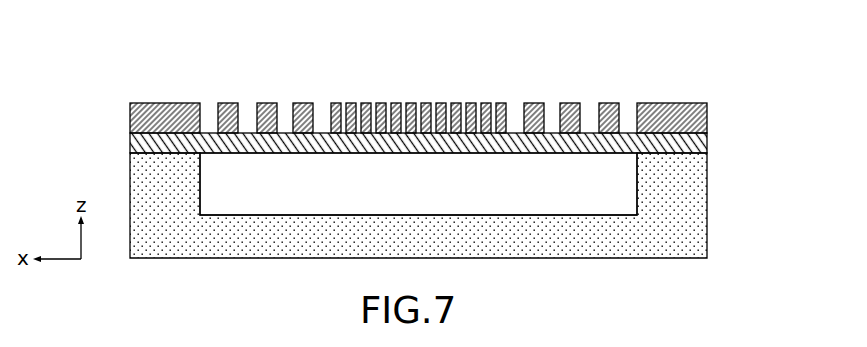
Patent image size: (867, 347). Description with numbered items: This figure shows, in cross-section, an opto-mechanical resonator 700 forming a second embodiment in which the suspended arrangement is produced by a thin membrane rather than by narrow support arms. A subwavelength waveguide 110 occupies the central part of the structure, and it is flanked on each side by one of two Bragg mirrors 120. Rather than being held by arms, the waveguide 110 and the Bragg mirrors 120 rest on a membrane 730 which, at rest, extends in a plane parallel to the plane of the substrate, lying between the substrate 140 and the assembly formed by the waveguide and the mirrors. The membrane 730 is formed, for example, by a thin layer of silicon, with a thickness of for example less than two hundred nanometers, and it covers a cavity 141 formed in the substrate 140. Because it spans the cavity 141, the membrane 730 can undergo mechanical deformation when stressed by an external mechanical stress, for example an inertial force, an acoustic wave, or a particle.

The opto-mechanical resonator 700 is at (157, 85).
The subwavelength waveguide 110 is at (515, 95).
The Bragg mirrors 120 is at (320, 95).
The membrane 730 is at (700, 145).
The substrate 140 is at (698, 220).
The cavity 141 is at (568, 198).